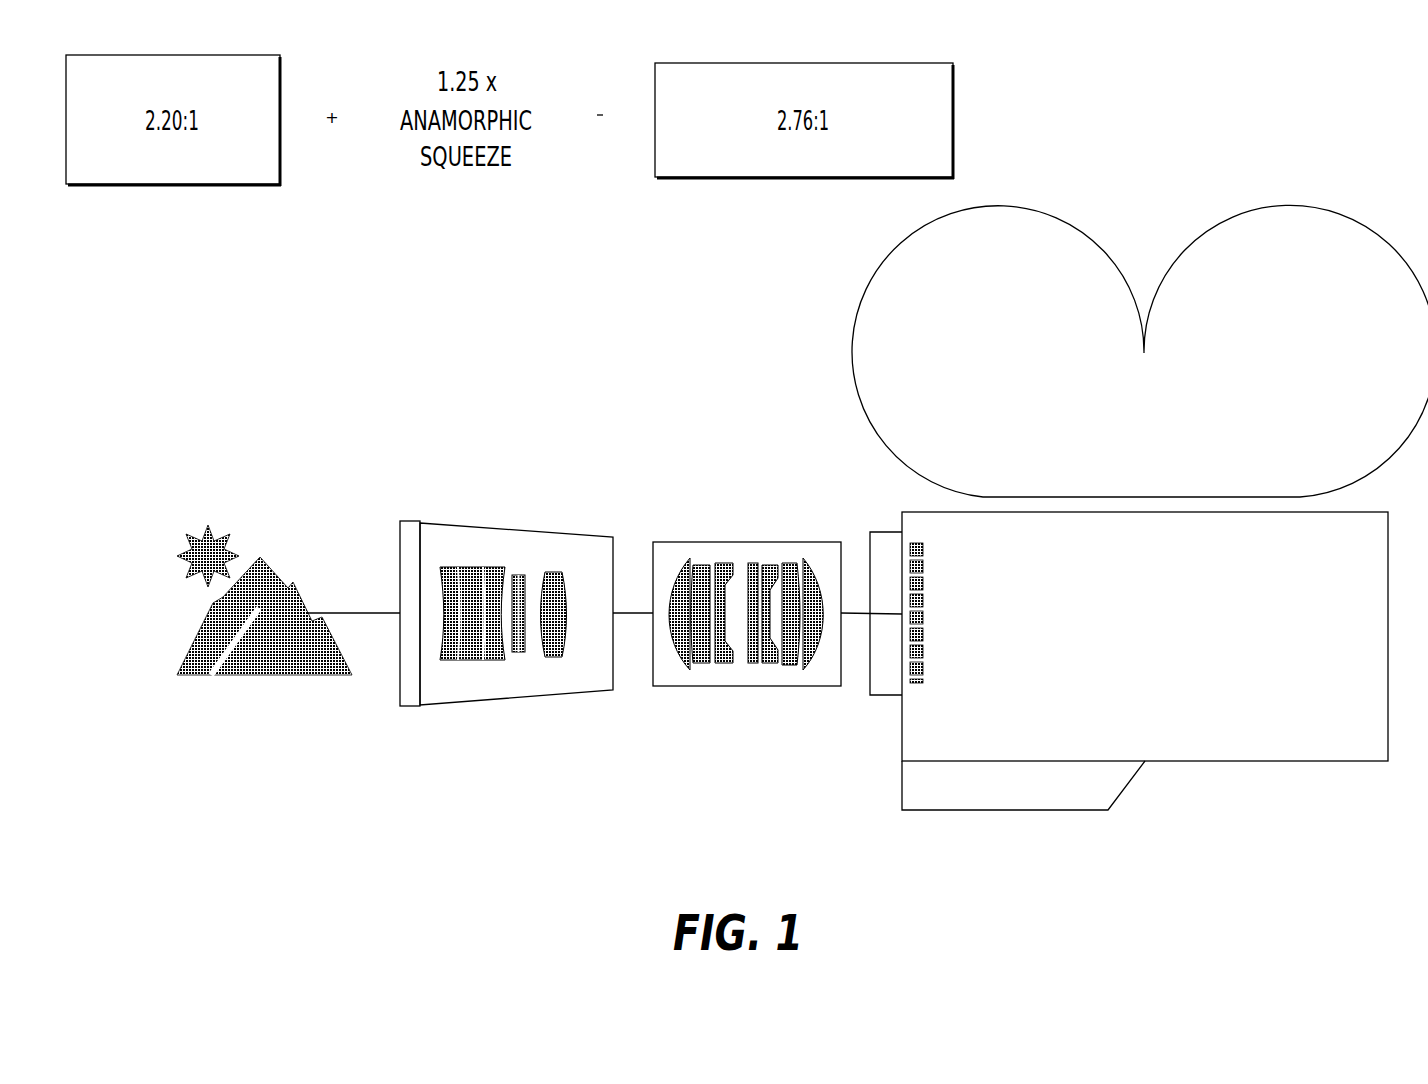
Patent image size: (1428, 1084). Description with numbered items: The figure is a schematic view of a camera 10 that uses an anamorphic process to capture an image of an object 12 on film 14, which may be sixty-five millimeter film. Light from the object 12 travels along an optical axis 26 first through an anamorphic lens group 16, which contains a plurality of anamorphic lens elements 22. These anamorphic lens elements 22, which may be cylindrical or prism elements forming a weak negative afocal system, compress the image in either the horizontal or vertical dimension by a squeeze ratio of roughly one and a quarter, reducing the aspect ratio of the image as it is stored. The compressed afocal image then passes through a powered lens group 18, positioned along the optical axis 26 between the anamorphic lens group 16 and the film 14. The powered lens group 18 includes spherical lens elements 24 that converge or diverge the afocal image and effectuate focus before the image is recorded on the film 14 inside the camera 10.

The camera 10 is at (1185, 762).
The object 12 is at (262, 556).
The film 14 is at (918, 683).
The anamorphic lens group 16 is at (463, 705).
The powered lens group 18 is at (683, 687).
The anamorphic lens elements 22 is at (451, 567).
The spherical lens elements 24 is at (680, 576).
The optical axis 26 is at (355, 613).